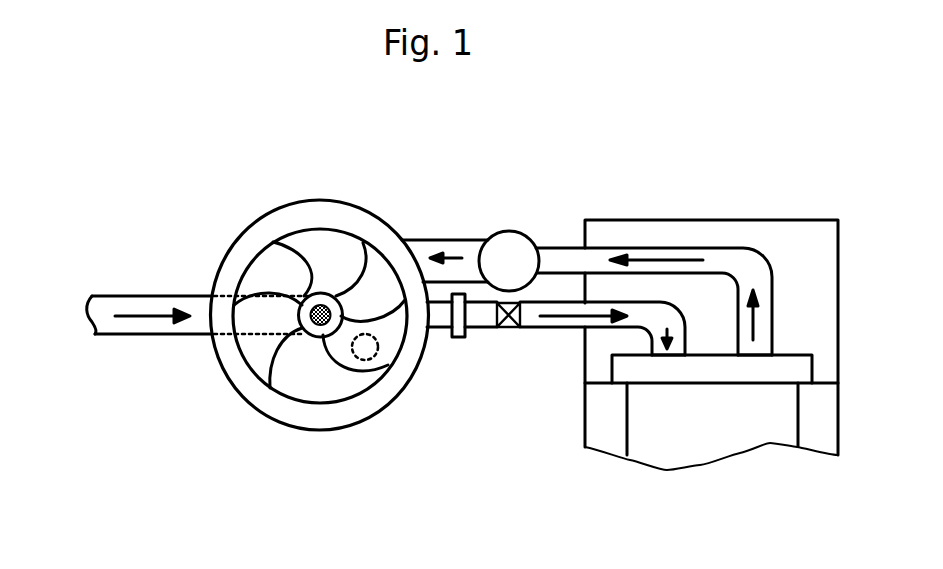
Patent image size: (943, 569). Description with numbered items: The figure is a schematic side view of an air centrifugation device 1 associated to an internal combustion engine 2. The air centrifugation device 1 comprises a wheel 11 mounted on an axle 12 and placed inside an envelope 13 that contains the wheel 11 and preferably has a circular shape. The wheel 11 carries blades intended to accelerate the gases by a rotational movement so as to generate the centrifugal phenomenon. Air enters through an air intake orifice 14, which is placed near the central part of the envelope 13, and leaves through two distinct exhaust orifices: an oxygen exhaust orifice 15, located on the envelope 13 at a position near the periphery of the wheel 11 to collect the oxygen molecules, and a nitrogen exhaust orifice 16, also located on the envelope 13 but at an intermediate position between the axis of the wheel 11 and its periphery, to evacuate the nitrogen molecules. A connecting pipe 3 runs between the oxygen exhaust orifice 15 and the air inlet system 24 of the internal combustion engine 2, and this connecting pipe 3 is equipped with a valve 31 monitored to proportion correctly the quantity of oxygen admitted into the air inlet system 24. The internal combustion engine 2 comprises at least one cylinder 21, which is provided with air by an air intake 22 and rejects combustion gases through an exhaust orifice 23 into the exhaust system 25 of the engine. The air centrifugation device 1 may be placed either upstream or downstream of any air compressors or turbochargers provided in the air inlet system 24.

The air centrifugation device 1 is at (330, 217).
The wheel 11 is at (297, 235).
The axle 12 is at (312, 308).
The envelope 13 is at (255, 410).
The air intake orifice 14 is at (311, 333).
The oxygen exhaust orifice 15 is at (443, 328).
The nitrogen exhaust orifice 16 is at (366, 350).
The internal combustion engine 2 is at (718, 233).
The cylinder 21 is at (703, 425).
The air intake 22 is at (670, 357).
The exhaust orifice 23 is at (752, 357).
The air inlet system 24 is at (543, 328).
The exhaust system 25 is at (467, 252).
The connecting pipe 3 is at (479, 328).
The valve 31 is at (507, 328).